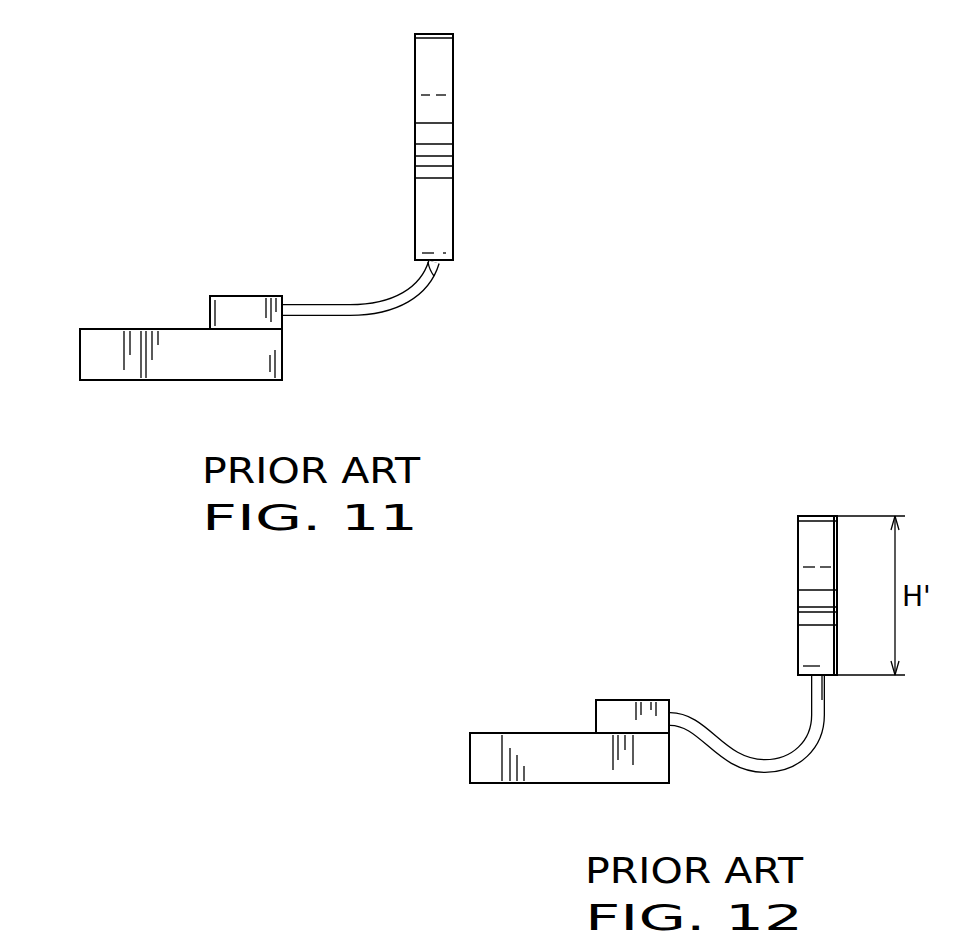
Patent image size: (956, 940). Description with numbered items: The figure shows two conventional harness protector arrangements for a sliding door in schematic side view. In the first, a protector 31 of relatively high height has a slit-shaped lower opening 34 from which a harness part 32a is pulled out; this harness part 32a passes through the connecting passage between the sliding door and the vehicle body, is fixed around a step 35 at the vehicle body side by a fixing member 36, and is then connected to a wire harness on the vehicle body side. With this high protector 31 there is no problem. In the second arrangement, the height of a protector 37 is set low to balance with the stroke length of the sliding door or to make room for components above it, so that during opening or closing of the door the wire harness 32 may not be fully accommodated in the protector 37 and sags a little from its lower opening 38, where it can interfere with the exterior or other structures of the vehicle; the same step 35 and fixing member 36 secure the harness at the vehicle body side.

In FIG. 11, the protector 31 is at (453, 144).
In FIG. 12, the wire harness 32 is at (767, 767).
In FIG. 11, the harness part 32a is at (357, 318).
In FIG. 11, the lower opening 34 is at (442, 268).
In FIG. 11, the step 35 is at (250, 362).
In FIG. 12, the step 35 is at (535, 765).
In FIG. 11, the fixing member 36 is at (240, 310).
In FIG. 12, the fixing member 36 is at (615, 706).
In FIG. 12, the protector 37 is at (798, 603).
In FIG. 12, the lower opening 38 is at (828, 690).